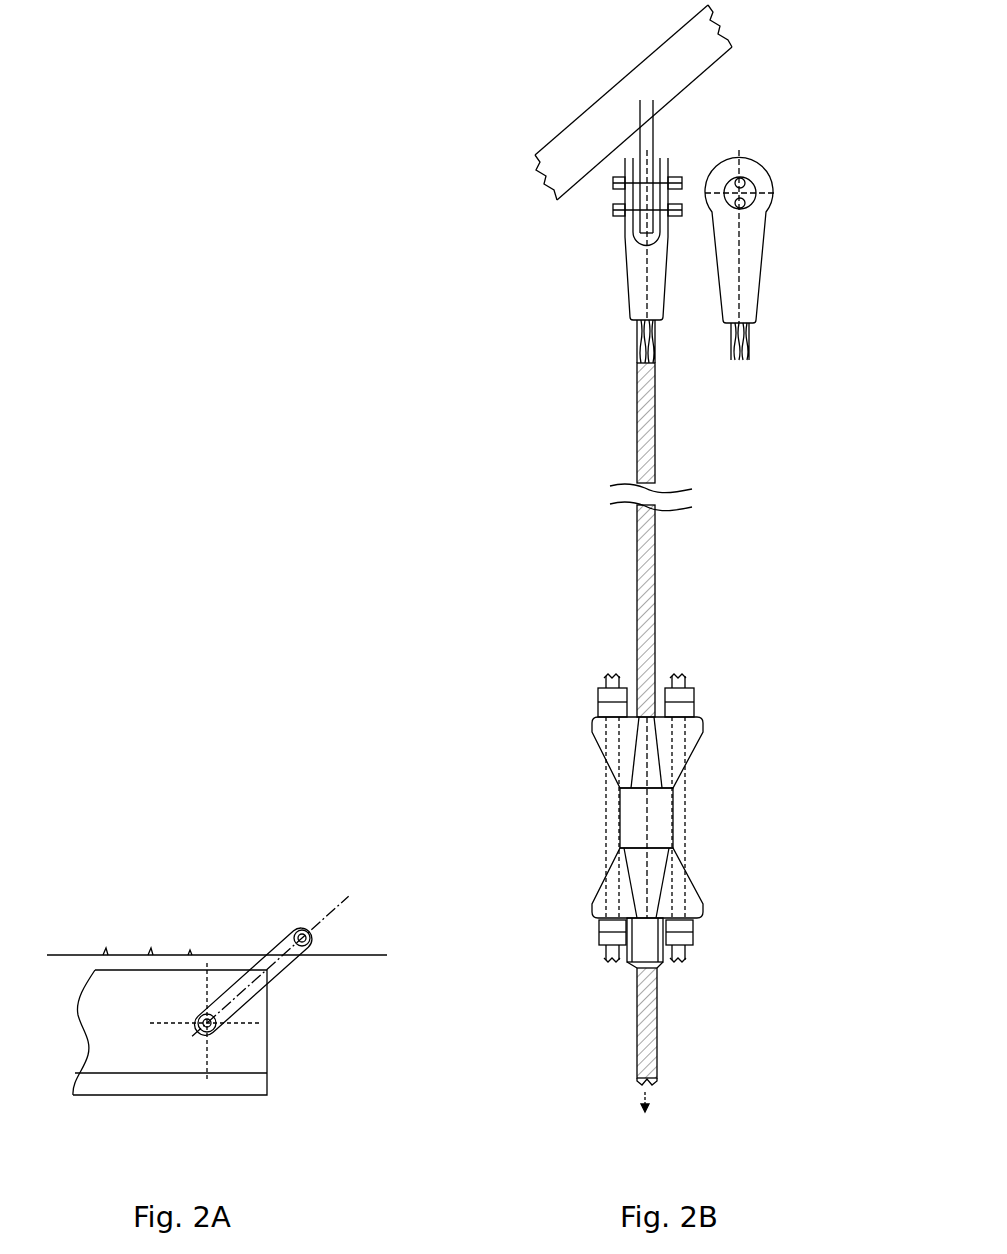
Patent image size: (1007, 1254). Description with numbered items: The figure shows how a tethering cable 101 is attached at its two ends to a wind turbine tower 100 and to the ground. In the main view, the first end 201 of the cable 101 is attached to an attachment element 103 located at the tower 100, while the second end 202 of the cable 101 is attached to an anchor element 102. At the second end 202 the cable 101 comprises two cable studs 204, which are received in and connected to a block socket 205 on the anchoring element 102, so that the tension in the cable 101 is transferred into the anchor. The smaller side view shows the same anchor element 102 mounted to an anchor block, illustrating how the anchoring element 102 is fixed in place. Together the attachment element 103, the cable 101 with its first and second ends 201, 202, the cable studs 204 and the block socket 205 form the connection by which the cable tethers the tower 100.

In FIG. 2B, the tower 100 is at (557, 147).
In FIG. 2B, the cable 101 is at (587, 540).
In FIG. 2A, the anchoring element 102 is at (275, 953).
In FIG. 2B, the anchoring element 102 is at (648, 1050).
In FIG. 2B, the attachment element 103 is at (648, 133).
In FIG. 2B, the first end 201 is at (632, 365).
In FIG. 2B, the second end 202 is at (650, 632).
In FIG. 2B, the cable studs 204 is at (610, 805).
In FIG. 2B, the block socket 205 is at (698, 905).